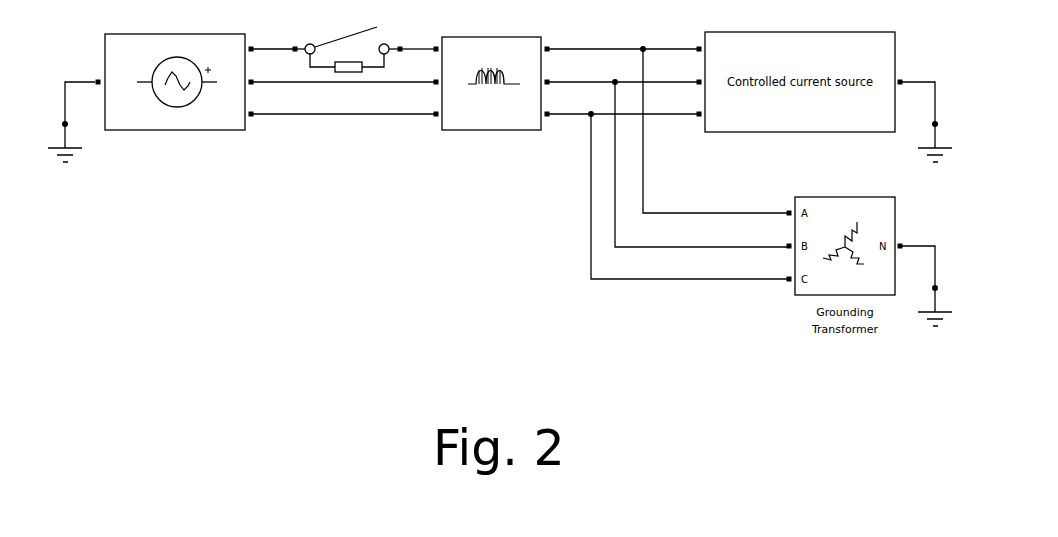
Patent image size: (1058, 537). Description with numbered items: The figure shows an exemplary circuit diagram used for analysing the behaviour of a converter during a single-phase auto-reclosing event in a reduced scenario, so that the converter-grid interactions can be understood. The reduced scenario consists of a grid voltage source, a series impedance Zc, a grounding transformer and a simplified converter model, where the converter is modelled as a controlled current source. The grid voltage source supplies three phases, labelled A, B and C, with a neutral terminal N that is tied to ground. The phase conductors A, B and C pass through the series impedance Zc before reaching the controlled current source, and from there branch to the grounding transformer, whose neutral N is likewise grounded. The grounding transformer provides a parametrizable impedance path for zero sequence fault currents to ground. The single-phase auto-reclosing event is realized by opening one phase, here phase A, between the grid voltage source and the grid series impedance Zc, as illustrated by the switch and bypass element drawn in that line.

The neutral terminal of the source N is at (82, 119).
The phase A line with fault switch A is at (335, 49).
The phase B line B is at (335, 82).
The phase C line C is at (335, 114).
The series impedance Zc is at (496, 93).